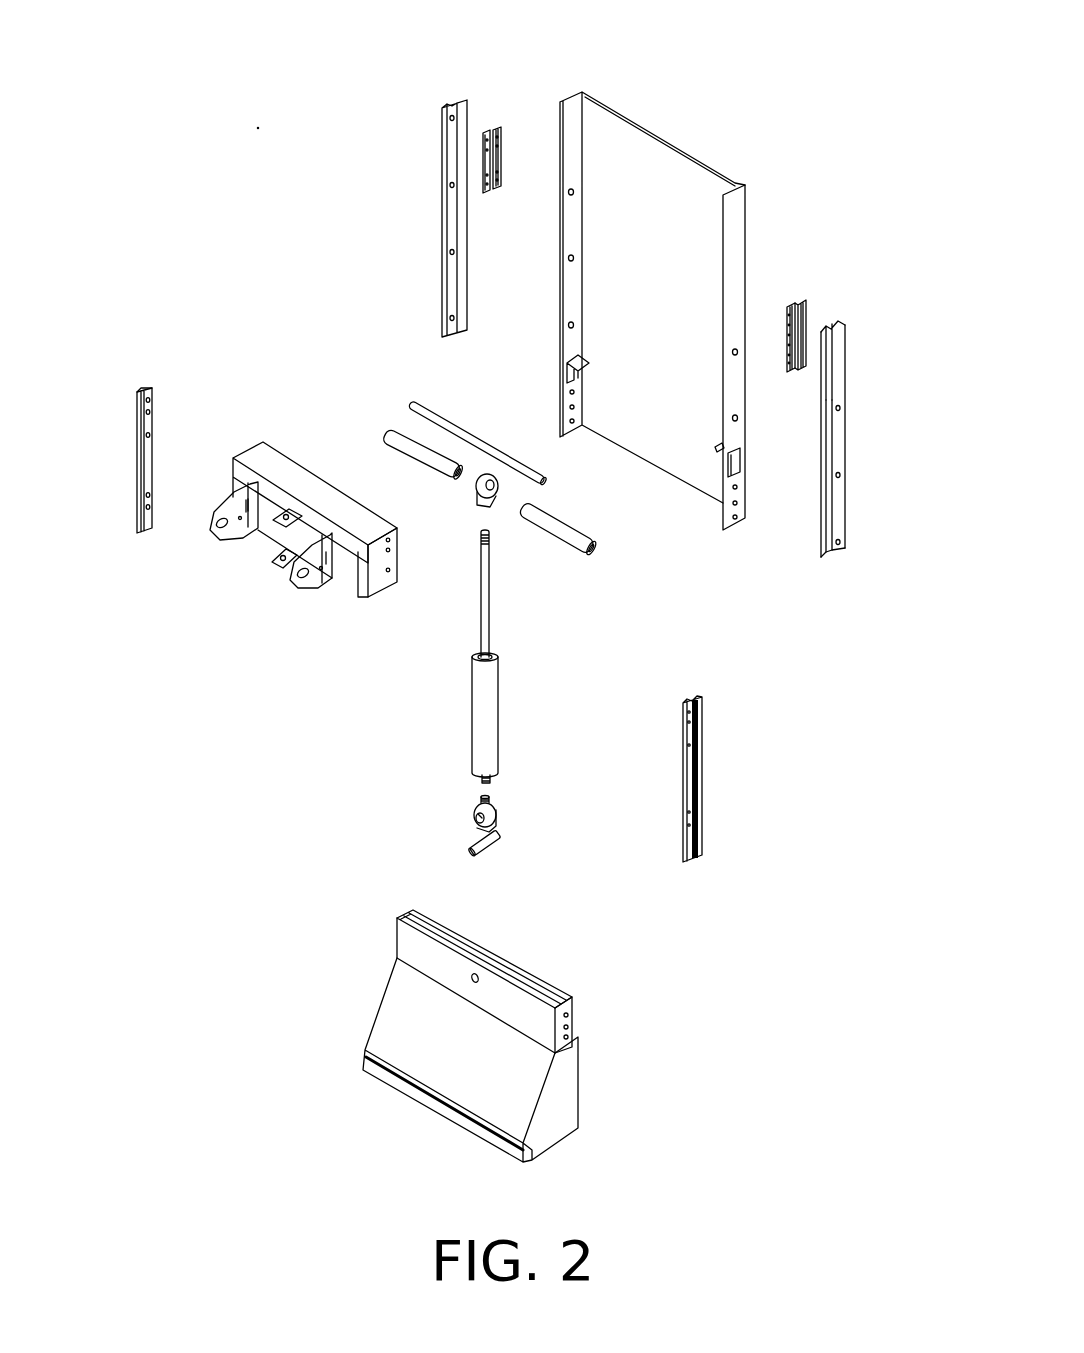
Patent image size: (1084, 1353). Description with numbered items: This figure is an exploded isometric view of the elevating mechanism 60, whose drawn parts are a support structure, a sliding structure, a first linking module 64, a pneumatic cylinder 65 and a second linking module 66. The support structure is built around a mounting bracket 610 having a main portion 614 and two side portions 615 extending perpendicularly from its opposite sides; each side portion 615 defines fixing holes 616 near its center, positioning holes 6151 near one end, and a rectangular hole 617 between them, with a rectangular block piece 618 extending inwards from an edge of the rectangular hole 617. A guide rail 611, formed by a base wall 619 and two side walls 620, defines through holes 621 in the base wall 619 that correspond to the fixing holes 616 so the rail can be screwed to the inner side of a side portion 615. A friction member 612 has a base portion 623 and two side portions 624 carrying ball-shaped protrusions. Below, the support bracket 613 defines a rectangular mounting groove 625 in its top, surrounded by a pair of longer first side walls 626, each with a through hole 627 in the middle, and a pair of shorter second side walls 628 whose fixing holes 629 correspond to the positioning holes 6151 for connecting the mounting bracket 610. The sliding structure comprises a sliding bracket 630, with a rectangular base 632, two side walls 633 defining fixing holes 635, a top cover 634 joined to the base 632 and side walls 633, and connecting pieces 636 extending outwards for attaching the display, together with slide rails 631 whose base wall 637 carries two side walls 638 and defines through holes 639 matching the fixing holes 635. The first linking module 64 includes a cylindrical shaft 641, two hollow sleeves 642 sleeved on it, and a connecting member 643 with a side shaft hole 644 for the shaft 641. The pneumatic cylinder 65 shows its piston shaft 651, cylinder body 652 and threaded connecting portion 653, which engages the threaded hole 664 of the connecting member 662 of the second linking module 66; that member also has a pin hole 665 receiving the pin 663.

The elevating mechanism 60 is at (254, 122).
The mounting bracket 610 is at (632, 106).
The main portion 614 is at (675, 165).
The side portions 615 is at (736, 206).
The fixing holes 616 is at (734, 287).
The rectangular hole 617 is at (741, 457).
The rectangular block piece 618 is at (720, 447).
The positioning holes 6151 is at (735, 517).
The friction member 612 is at (781, 354).
The side portions 624 is at (802, 307).
The base portion 623 is at (803, 308).
The guide rail 611 is at (868, 405).
The through holes 621 is at (838, 341).
The base wall 619 is at (838, 442).
The side walls 620 is at (823, 527).
The slide rail 631 is at (114, 521).
The base wall 637 is at (148, 463).
The through holes 639 is at (142, 412).
The side walls 638 is at (146, 387).
The sliding bracket 630 is at (240, 569).
The top cover 634 is at (253, 461).
The connecting pieces 636 is at (313, 578).
The base 632 is at (343, 580).
The side walls 633 is at (380, 580).
The fixing holes 635 is at (395, 540).
The first linking module 64 is at (389, 301).
The shaft 641 is at (408, 400).
The sleeves 642 is at (384, 428).
The connecting member 643 is at (473, 494).
The shaft hole 644 is at (497, 489).
The pneumatic cylinder 65 is at (602, 621).
The piston shaft 651 is at (488, 618).
The cylinder body 652 is at (487, 710).
The connecting portion 653 is at (493, 775).
The second linking module 66 is at (602, 801).
The connecting member 662 is at (497, 810).
The pin 663 is at (500, 840).
The threaded hole 664 is at (480, 797).
The pin hole 665 is at (473, 814).
The support bracket 613 is at (608, 1096).
The mounting groove 625 is at (420, 912).
The first side walls 626 is at (412, 947).
The through hole 627 is at (472, 978).
The second side walls 628 is at (573, 1008).
The fixing holes 629 is at (573, 1027).